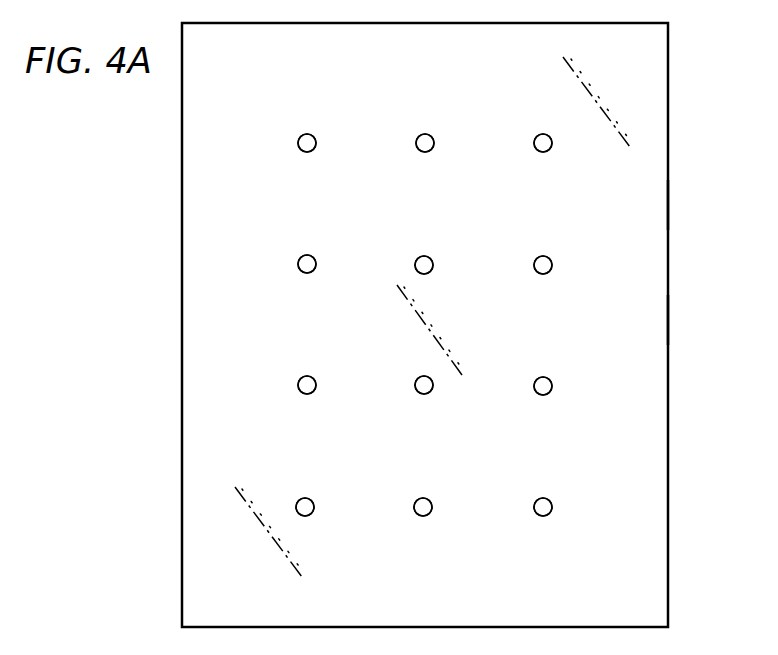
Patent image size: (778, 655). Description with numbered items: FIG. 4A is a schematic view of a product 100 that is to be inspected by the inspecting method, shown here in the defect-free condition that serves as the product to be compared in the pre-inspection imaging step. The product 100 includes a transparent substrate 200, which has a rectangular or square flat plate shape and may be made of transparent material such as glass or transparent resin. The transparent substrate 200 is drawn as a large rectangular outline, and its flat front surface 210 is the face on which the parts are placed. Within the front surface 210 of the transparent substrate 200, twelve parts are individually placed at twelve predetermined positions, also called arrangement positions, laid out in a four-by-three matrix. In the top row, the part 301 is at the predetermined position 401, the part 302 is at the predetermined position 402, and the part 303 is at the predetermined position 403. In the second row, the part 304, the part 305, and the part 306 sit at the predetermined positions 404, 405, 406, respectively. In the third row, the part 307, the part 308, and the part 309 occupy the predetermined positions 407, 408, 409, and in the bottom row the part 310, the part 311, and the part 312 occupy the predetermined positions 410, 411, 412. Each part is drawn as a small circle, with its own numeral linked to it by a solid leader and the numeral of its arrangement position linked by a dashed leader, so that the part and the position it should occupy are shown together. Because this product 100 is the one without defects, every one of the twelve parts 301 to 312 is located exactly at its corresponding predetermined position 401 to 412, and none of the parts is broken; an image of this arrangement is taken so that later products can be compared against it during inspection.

The product 100 is at (664, 72).
The transparent substrate 200 is at (672, 205).
The front surface 210 is at (648, 320).
The part 301 is at (298, 143).
The part 302 is at (416, 143).
The part 303 is at (534, 143).
The part 304 is at (298, 265).
The part 305 is at (433, 267).
The part 306 is at (552, 263).
The part 307 is at (298, 385).
The part 308 is at (417, 391).
The part 309 is at (549, 393).
The part 310 is at (311, 514).
The part 311 is at (429, 514).
The part 312 is at (552, 506).
The predetermined position 401 is at (305, 134).
The predetermined position 402 is at (424, 134).
The predetermined position 403 is at (544, 134).
The predetermined position 404 is at (310, 255).
The predetermined position 405 is at (426, 256).
The predetermined position 406 is at (540, 256).
The predetermined position 407 is at (305, 376).
The predetermined position 408 is at (418, 378).
The predetermined position 409 is at (546, 377).
The predetermined position 410 is at (309, 498).
The predetermined position 411 is at (425, 498).
The predetermined position 412 is at (540, 498).